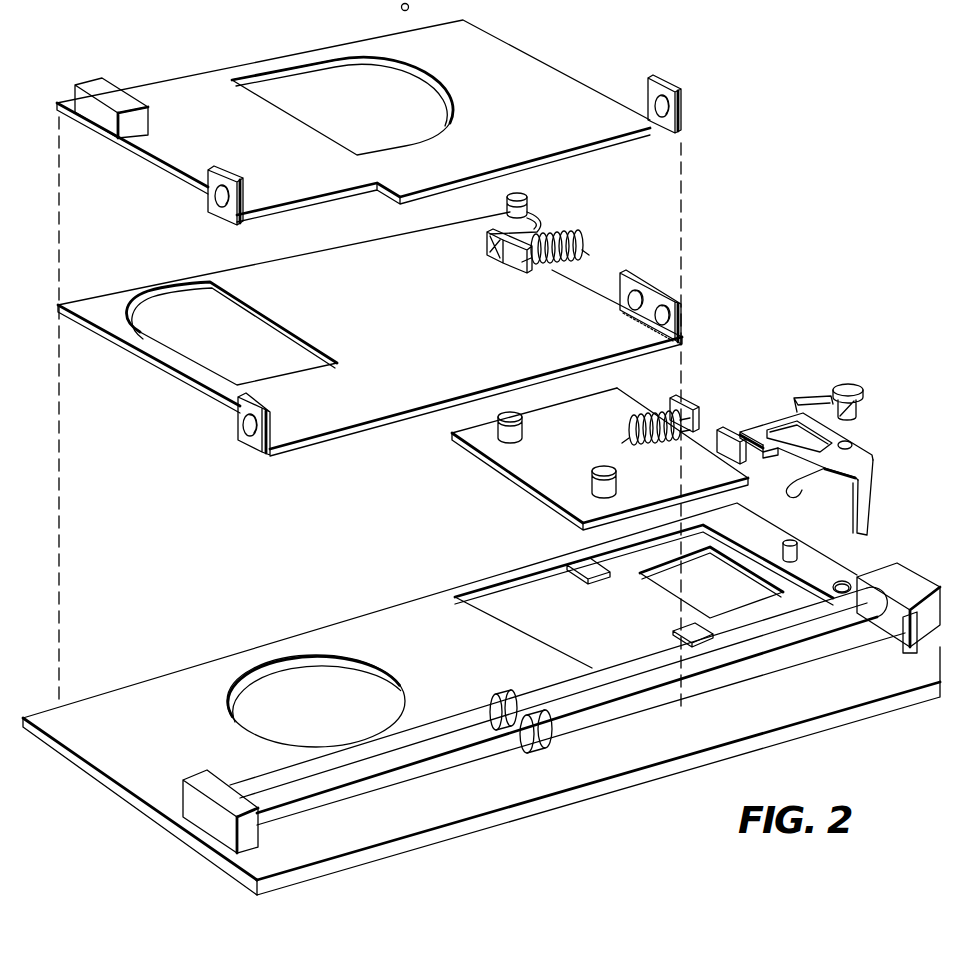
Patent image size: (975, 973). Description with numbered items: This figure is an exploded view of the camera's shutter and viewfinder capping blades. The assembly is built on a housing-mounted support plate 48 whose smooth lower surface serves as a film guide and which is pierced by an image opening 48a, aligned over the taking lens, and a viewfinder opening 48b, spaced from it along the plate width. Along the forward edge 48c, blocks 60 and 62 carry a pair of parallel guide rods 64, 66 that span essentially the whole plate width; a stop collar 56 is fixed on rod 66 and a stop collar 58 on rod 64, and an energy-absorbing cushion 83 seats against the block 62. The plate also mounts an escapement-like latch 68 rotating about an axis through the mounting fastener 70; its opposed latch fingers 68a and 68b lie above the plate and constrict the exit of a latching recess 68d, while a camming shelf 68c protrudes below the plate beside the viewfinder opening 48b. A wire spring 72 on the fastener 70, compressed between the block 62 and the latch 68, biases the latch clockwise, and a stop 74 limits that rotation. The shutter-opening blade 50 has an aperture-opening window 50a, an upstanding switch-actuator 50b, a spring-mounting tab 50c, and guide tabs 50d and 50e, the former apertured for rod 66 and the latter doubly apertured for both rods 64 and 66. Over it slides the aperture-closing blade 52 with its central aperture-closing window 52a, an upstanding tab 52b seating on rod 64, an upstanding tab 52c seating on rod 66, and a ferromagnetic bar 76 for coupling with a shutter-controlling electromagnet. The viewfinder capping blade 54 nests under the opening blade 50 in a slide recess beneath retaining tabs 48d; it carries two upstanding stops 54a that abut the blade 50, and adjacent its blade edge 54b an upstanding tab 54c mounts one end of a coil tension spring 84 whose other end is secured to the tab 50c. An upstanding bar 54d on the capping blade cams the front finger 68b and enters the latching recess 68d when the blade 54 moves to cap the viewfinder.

The support plate 48 is at (123, 773).
The image opening 48a is at (383, 681).
The viewfinder opening 48b is at (663, 587).
The forward edge 48c is at (663, 768).
The retaining tabs 48d is at (582, 576).
The shutter-opening blade 50 is at (146, 353).
The aperture-opening window 50a is at (207, 368).
The switch-actuator 50b is at (530, 198).
The spring-mounting tab 50c is at (503, 256).
The guide tab 50d is at (258, 440).
The guide tab 50e is at (682, 325).
The aperture-closing blade 52 is at (180, 176).
The aperture-closing window 52a is at (293, 87).
The upstanding tab 52b is at (207, 196).
The upstanding tab 52c is at (680, 103).
The viewfinder capping blade 54 is at (533, 491).
The upstanding stops 54a is at (603, 467).
The blade edge 54b is at (638, 397).
The upstanding tab 54c is at (690, 405).
The upstanding bar 54d is at (727, 443).
The stop collar 56 is at (552, 746).
The stop collar 58 is at (500, 695).
The block 60 is at (208, 772).
The block 62 is at (907, 577).
The guide rod 64 is at (605, 678).
The guide rod 66 is at (747, 668).
The latch 68 is at (876, 441).
The back latch finger 68a is at (762, 440).
The front latch finger 68b is at (790, 498).
The camming shelf 68c is at (853, 517).
The latching recess 68d is at (802, 446).
The mounting fastener 70 is at (849, 384).
The wire spring 72 is at (810, 397).
The stop 74 is at (783, 550).
The bar 76 is at (116, 90).
The energy-absorbing cushion 83 is at (908, 641).
The coil tension spring 84 is at (568, 262).